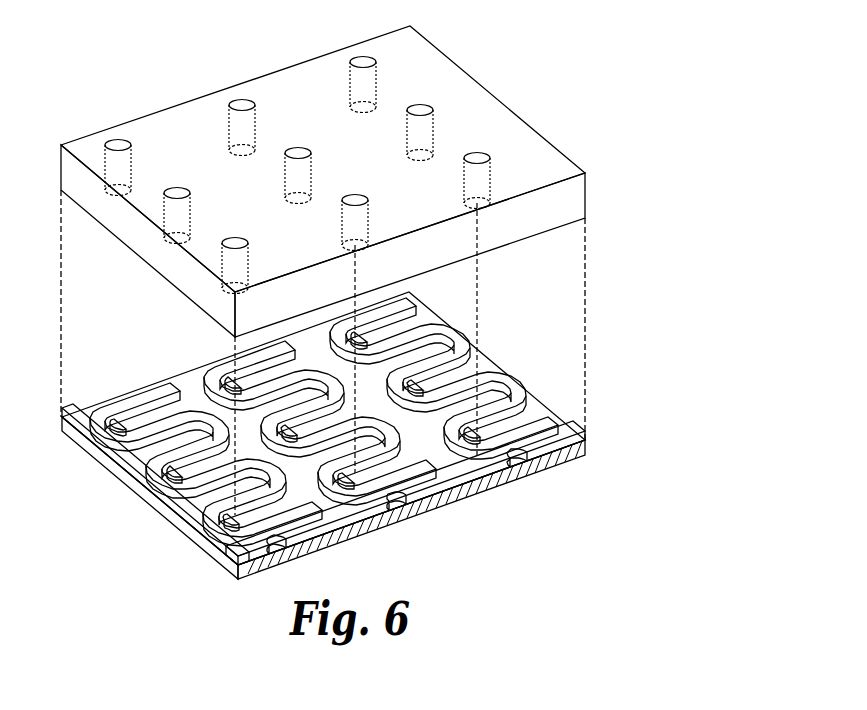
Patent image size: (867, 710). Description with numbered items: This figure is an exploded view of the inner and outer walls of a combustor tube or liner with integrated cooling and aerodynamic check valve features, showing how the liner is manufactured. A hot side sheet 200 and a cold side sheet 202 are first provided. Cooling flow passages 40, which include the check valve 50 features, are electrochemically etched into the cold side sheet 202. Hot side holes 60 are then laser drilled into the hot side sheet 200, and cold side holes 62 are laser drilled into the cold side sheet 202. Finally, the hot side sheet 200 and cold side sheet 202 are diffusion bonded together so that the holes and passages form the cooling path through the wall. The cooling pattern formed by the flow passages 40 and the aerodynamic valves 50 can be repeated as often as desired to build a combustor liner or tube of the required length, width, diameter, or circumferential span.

The hot side sheet 200 is at (588, 177).
The cold side sheet 202 is at (592, 449).
The hot side holes 60 is at (177, 187).
The cold side holes 62 is at (314, 340).
The check valve 50 is at (380, 395).
The cooling flow passages 40 is at (437, 390).